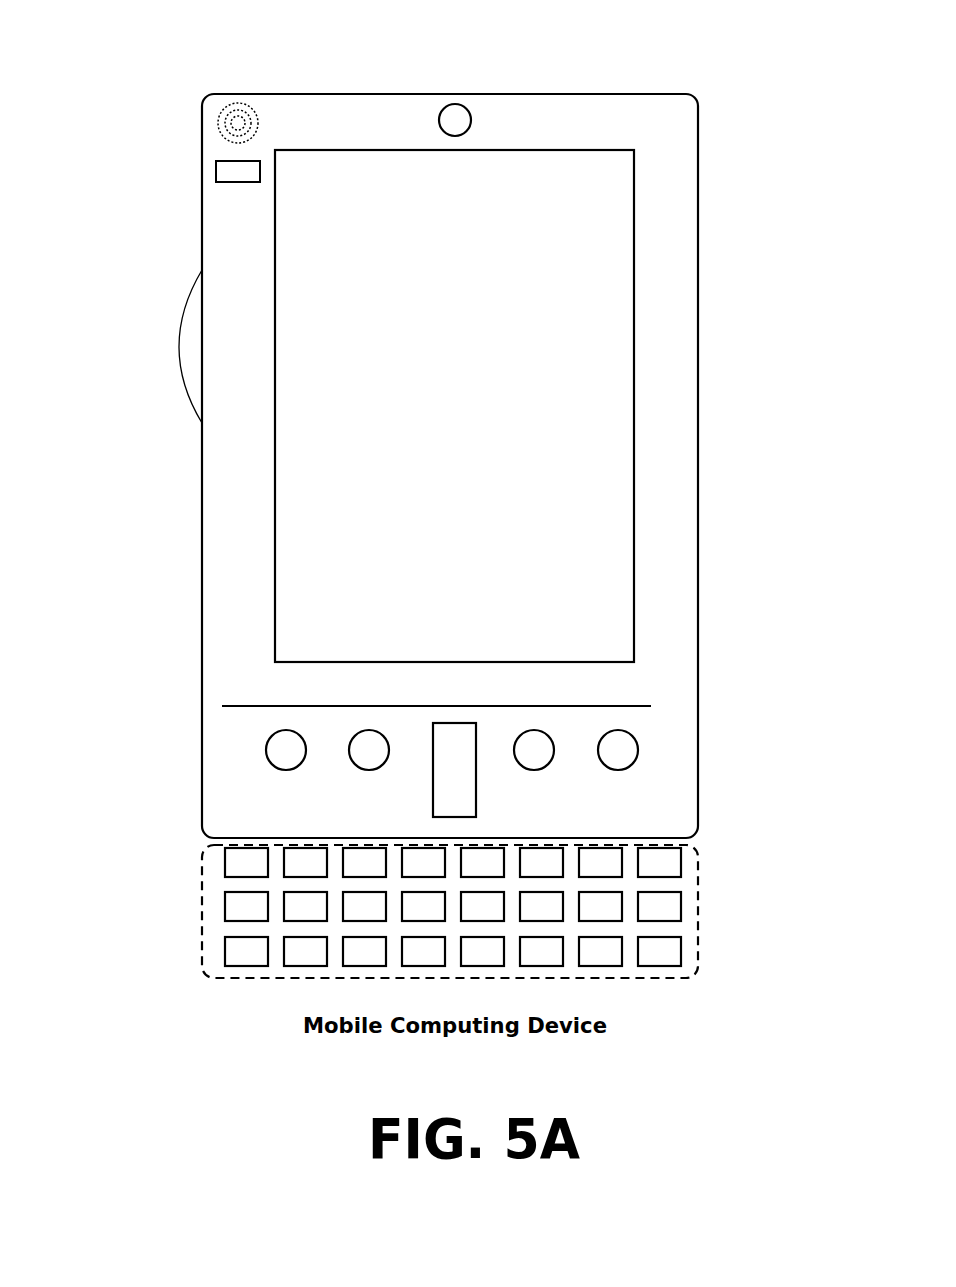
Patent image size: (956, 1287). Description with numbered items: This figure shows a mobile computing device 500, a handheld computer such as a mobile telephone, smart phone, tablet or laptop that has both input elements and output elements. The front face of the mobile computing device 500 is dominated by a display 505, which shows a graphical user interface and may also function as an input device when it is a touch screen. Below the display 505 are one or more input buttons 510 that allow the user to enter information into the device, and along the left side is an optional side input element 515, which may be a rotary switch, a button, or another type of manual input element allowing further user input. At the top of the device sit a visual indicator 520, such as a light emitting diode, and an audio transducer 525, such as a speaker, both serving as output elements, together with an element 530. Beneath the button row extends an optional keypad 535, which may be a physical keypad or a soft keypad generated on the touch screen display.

The mobile computing device 500 is at (687, 114).
The display 505 is at (385, 573).
The input buttons 510 is at (453, 777).
The side input element 515 is at (192, 344).
The visual indicator 520 is at (218, 176).
The audio transducer 525 is at (218, 125).
The camera 530 is at (465, 118).
The keypad 535 is at (210, 955).